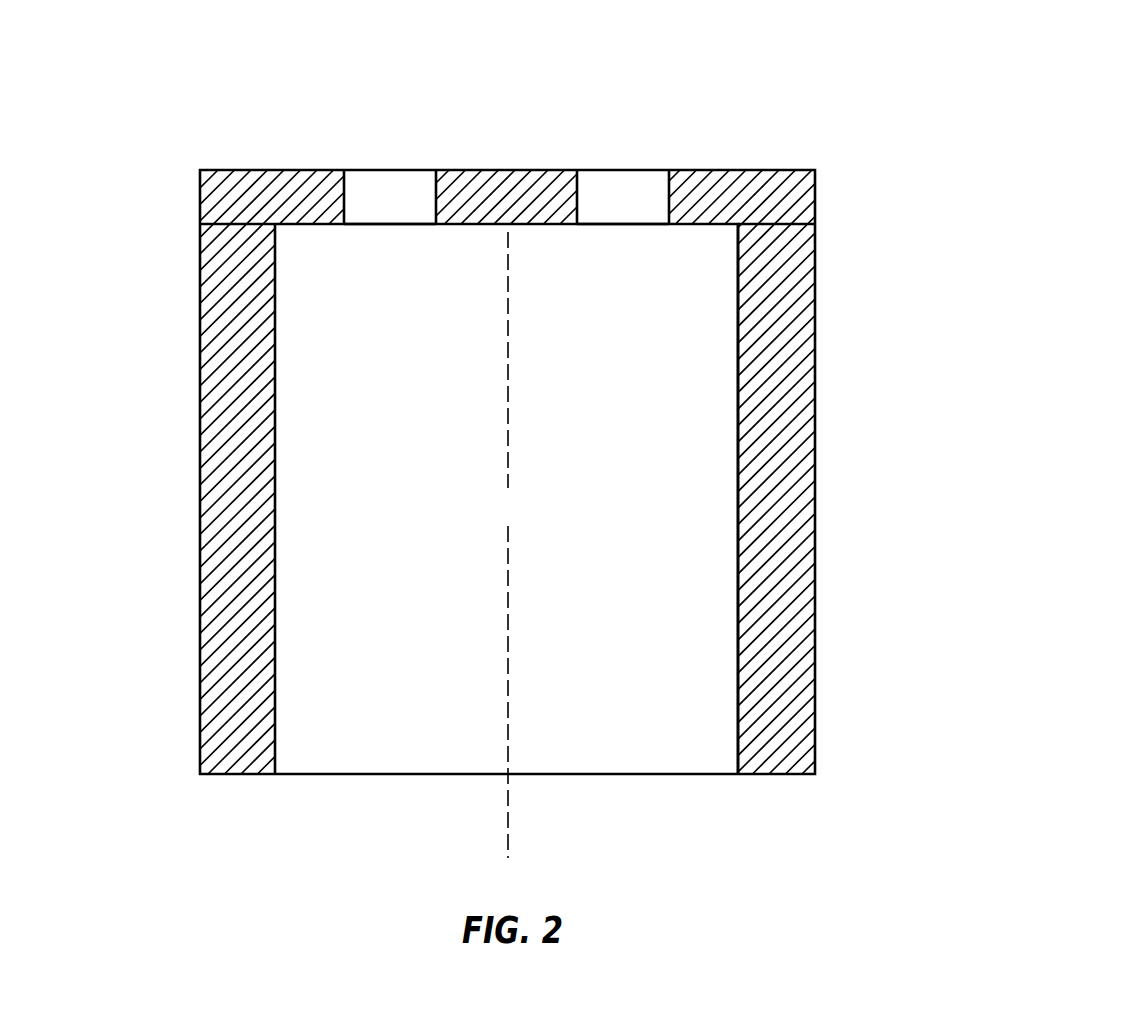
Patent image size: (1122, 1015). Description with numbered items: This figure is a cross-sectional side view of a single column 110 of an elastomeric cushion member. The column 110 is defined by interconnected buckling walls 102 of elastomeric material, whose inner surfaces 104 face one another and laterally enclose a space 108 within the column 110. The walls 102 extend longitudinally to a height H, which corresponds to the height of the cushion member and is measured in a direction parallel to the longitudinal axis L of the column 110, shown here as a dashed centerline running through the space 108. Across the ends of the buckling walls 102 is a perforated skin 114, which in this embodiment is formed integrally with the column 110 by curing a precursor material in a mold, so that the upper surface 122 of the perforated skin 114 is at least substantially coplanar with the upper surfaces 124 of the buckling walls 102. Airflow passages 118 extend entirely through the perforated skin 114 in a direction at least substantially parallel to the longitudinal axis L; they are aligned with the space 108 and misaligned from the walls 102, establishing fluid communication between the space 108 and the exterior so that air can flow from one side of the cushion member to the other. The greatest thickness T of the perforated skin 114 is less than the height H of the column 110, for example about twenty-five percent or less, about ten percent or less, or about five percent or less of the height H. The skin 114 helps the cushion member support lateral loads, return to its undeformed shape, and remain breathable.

The column 110 is at (197, 80).
The interconnected buckling walls 102 is at (785, 317).
The inner surfaces 104 is at (738, 378).
The space 108 is at (527, 518).
The perforated skin 114 is at (511, 190).
The airflow passages 118 is at (346, 205).
The upper surface 122 is at (479, 170).
The upper surfaces 124 is at (766, 170).
The greatest thickness T is at (315, 238).
The height H is at (128, 170).
The longitudinal axis L is at (508, 827).